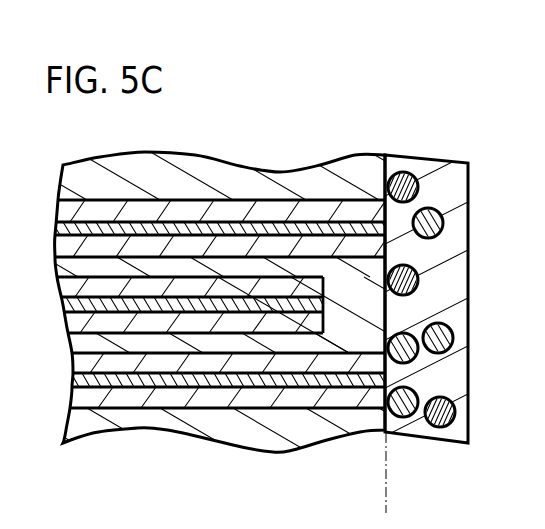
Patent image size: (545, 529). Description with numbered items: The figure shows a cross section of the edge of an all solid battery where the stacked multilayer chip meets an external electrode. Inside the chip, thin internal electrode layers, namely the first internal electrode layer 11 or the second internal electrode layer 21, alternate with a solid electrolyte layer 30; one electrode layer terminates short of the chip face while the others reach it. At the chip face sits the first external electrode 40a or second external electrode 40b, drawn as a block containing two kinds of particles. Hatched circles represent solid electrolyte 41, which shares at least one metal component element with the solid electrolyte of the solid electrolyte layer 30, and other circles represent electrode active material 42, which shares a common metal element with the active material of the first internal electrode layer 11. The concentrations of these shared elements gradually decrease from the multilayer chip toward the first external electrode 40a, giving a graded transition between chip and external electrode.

The first internal electrode layer 11 is at (214, 252).
The second internal electrode layer 21 is at (250, 248).
The solid electrolyte layer 30 is at (155, 265).
The first external electrode 40a is at (447, 271).
The second external electrode 40b is at (423, 299).
The solid electrolyte 41 is at (408, 176).
The electrode active material 42 is at (405, 408).